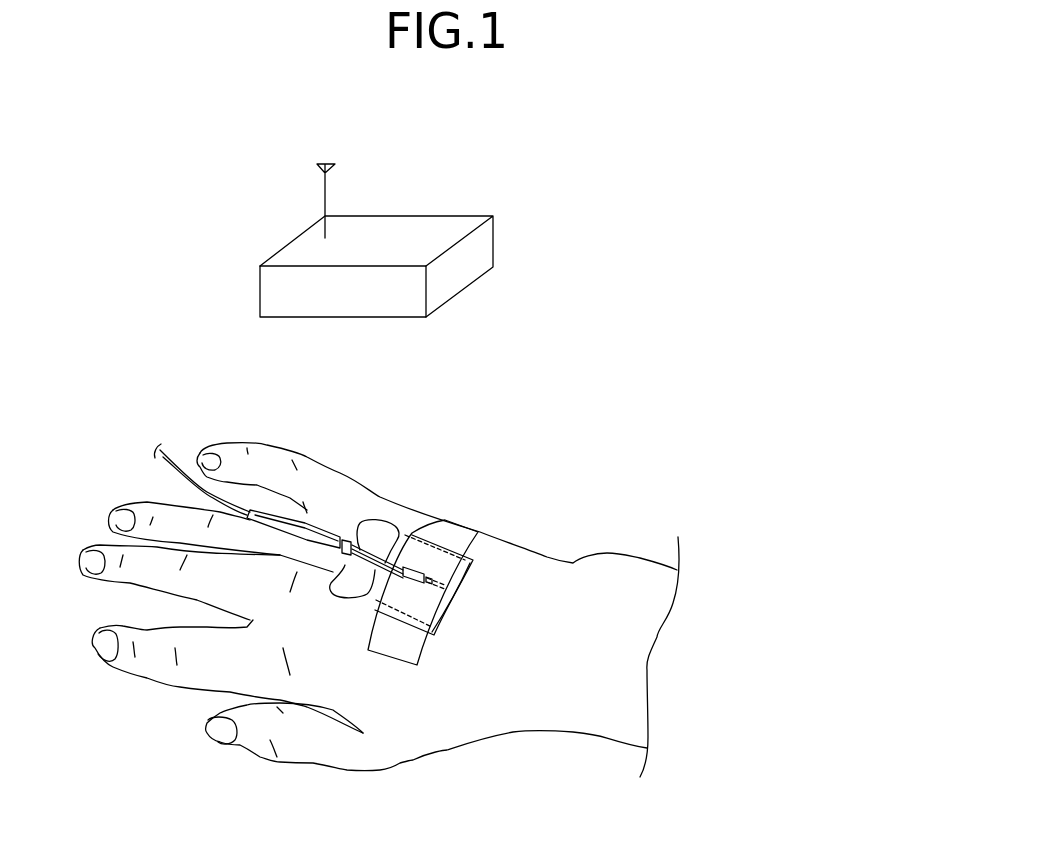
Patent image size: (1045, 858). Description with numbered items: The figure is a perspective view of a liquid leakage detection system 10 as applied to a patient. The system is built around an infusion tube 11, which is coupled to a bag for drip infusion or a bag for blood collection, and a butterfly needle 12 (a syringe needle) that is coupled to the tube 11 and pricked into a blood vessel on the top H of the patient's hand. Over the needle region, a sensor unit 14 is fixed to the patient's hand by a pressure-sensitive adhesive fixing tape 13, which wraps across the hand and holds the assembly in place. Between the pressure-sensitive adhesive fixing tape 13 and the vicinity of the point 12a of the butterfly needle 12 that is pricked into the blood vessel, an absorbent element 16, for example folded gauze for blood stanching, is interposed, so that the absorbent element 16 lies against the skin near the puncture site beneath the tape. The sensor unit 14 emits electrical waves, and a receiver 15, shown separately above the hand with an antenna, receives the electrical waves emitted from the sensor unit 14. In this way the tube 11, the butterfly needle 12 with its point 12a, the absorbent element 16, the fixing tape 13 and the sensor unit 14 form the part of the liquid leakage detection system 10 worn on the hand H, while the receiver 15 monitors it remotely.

The liquid leakage detection system 10 is at (720, 130).
The infusion tube 11 is at (173, 458).
The butterfly needle 12 is at (373, 537).
The point of the butterfly needle 12a is at (437, 585).
The pressure-sensitive adhesive fixing tape 13 is at (455, 532).
The sensor unit 14 is at (422, 566).
The receiver 15 is at (473, 197).
The absorbent element 16 is at (440, 607).
The top of a patient hand H is at (508, 713).